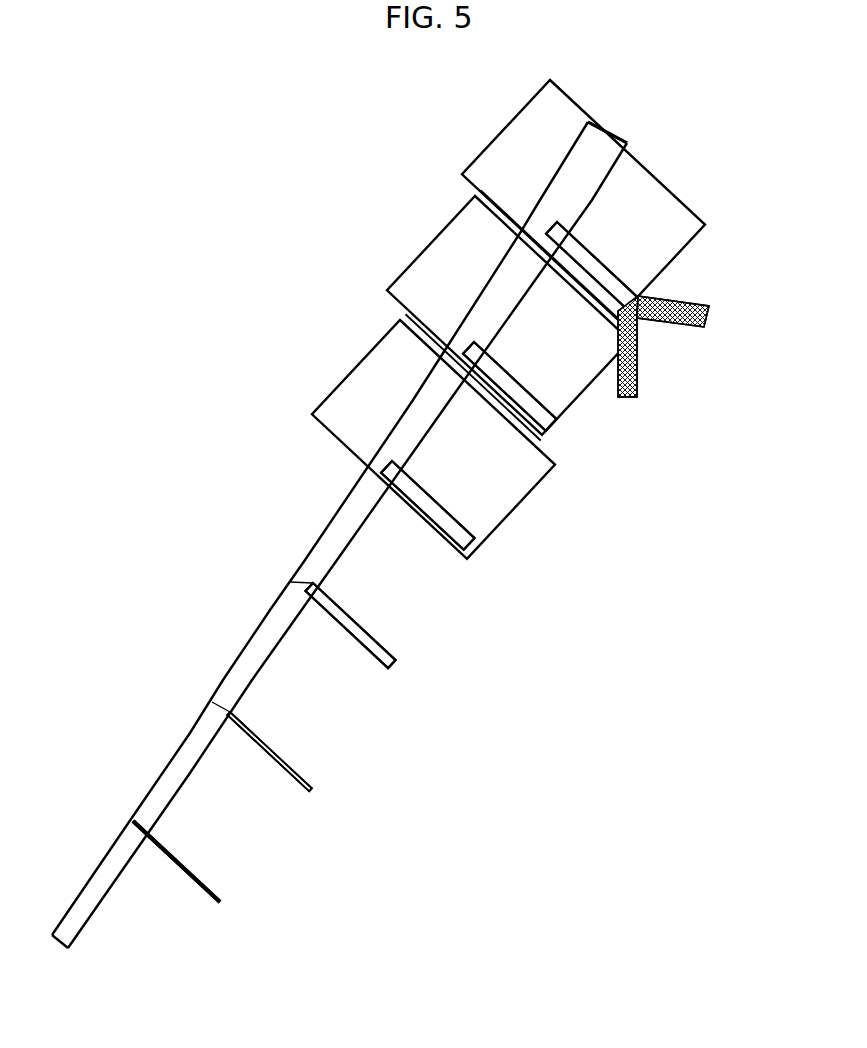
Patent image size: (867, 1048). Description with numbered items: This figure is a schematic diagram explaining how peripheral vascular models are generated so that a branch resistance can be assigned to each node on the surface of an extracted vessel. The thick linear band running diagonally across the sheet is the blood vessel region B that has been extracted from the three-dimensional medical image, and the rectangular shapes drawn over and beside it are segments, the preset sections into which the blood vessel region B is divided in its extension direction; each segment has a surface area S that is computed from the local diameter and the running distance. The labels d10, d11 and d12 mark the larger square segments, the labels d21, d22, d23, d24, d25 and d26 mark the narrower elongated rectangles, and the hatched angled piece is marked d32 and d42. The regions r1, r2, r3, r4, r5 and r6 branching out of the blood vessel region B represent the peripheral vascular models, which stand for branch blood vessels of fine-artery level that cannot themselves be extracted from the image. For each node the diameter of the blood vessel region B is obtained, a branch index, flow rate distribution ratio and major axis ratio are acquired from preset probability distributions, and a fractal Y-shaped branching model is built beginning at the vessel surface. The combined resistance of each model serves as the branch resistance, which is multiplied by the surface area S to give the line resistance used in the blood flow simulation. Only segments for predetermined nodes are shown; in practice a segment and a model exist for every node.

The blood vessel region B is at (588, 148).
The surface area of segment S is at (339, 535).
The first-type region d1^0 d10 is at (583, 199).
The first-type region d1^1 d11 is at (508, 312).
The first-type region d1^2 d12 is at (433, 436).
The second-type region d2^1 d21 is at (593, 266).
The second-type region d2^2 d22 is at (509, 386).
The second-type region d2^3 d23 is at (428, 505).
The second-type region d2^4 d24 is at (343, 625).
The second-type region d2^5 d25 is at (262, 746).
The second-type region d2^6 d26 is at (176, 861).
The third-type region d3^2 d32 is at (609, 346).
The fourth-type region d4^2 d42 is at (673, 297).
The peripheral vascular model region r1 is at (617, 285).
The peripheral vascular model region r2 is at (537, 408).
The peripheral vascular model region r3 is at (470, 526).
The peripheral vascular model region r4 is at (385, 648).
The peripheral vascular model region r5 is at (300, 771).
The peripheral vascular model region r6 is at (205, 882).